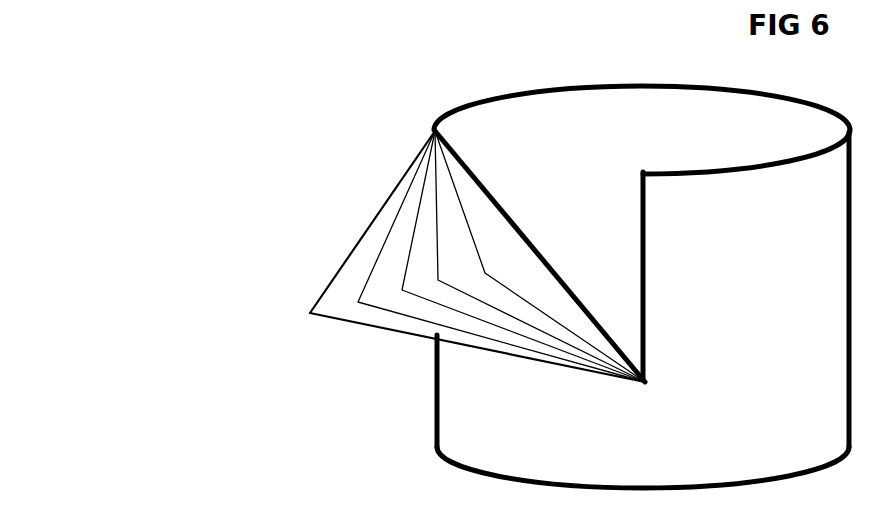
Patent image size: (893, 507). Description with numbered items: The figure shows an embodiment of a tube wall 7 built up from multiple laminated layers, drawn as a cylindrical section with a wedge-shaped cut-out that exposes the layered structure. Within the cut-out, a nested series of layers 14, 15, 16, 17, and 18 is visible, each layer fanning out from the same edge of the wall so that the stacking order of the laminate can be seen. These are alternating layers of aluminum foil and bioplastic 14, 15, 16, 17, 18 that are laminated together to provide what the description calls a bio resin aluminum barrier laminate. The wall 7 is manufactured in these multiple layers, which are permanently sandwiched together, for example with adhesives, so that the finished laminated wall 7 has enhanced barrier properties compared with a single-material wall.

The tube wall 7 is at (405, 418).
The laminated layer 14 is at (333, 303).
The laminated layer 15 is at (383, 283).
The laminated layer 16 is at (418, 263).
The laminated layer 17 is at (445, 223).
The laminated layer 18 is at (473, 190).